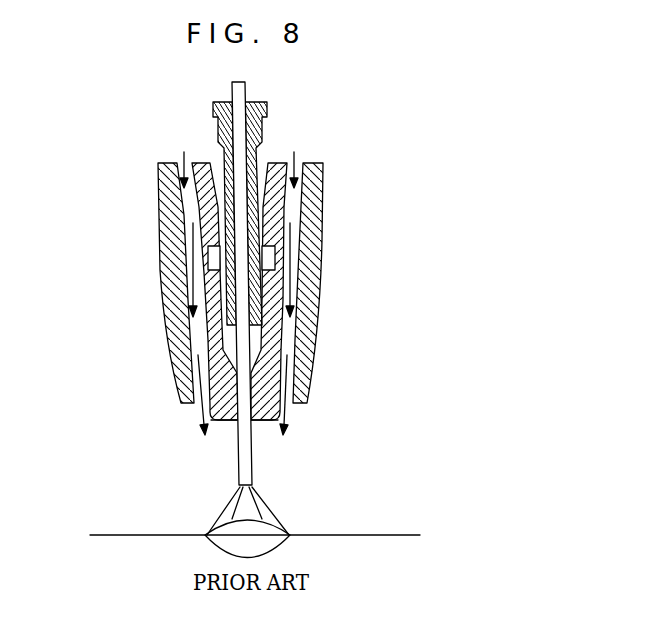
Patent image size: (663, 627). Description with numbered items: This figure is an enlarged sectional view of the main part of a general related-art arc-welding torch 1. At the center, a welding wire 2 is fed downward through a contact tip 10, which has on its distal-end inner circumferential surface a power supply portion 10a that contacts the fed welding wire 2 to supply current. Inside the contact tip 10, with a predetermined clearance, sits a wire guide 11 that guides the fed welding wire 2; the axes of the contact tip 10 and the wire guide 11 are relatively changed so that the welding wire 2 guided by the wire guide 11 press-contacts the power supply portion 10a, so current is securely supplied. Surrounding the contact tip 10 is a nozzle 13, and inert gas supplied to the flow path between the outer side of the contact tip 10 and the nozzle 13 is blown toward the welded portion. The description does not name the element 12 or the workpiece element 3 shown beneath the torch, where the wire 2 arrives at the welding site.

The arc-welding torch 1 is at (244, 291).
The welding wire 2 is at (253, 462).
The base material / workpiece 3 is at (133, 535).
The contact tip 10 is at (272, 333).
The power supply portion 10a is at (246, 389).
The wire guide 11 is at (268, 213).
The collet / electrode holder 12 is at (253, 158).
The nozzle 13 is at (173, 343).